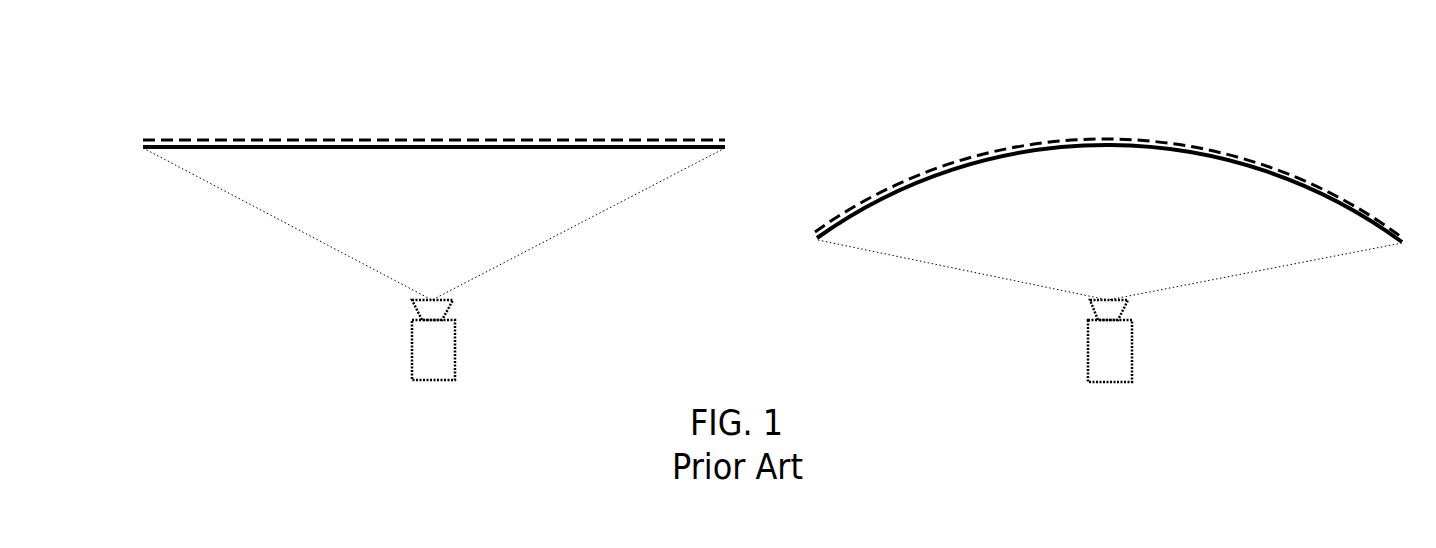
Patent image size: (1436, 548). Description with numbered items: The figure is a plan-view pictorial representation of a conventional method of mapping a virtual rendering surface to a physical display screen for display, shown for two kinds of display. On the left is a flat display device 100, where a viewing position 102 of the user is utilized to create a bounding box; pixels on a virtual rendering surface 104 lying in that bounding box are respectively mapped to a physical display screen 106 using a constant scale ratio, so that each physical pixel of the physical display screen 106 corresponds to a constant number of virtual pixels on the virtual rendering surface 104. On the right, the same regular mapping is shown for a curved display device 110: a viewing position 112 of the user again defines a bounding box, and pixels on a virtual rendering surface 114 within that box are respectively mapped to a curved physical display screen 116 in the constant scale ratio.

The flat display device 100 is at (434, 235).
The viewing position 102 is at (428, 381).
The virtual rendering surface 104 is at (187, 143).
The physical display screen 106 is at (187, 143).
The curved display device 110 is at (1111, 254).
The viewing position 112 is at (1067, 363).
The virtual rendering surface 114 is at (852, 203).
The physical display screen 116 is at (852, 203).